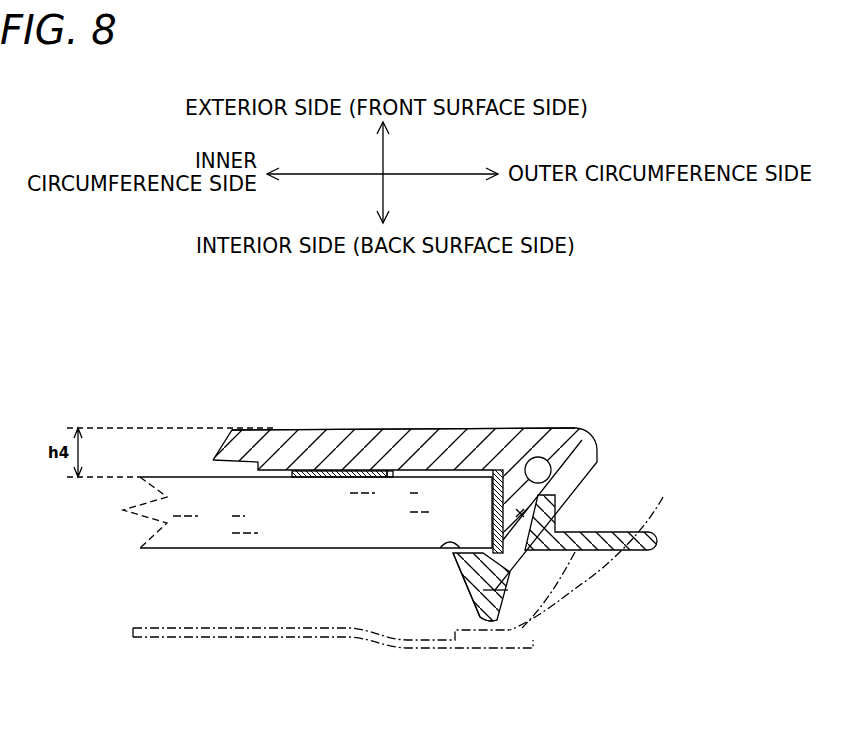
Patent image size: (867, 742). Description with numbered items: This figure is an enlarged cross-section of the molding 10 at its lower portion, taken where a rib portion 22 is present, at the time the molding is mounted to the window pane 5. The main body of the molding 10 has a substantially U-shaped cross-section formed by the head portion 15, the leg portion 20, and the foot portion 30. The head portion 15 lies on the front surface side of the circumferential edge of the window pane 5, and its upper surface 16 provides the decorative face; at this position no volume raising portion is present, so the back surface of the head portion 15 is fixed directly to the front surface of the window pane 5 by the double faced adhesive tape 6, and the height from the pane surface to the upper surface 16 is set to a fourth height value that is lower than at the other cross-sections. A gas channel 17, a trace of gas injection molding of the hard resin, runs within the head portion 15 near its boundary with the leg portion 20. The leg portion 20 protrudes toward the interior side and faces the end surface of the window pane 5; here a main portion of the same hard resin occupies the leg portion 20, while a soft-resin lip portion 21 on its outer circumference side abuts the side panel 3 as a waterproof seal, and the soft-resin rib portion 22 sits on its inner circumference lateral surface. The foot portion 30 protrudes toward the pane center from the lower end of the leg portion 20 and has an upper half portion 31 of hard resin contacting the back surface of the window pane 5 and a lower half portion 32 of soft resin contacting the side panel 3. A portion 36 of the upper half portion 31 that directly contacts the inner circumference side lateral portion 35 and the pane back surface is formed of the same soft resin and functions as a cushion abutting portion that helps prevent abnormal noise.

The side panel 3 is at (580, 557).
The window pane 5 is at (200, 533).
The double faced adhesive tape 6 is at (333, 477).
The molding 10 is at (272, 396).
The head portion 15 is at (393, 440).
The upper surface 16 is at (342, 428).
The gas channel 17 is at (538, 470).
The leg portion 20 is at (520, 513).
The lip portion 21 is at (578, 530).
The rib portion 22 is at (497, 502).
The foot portion 30 is at (503, 563).
The upper half portion 31 is at (470, 590).
The lower half portion 32 is at (483, 613).
The inner circumference side lateral portion 35 is at (463, 580).
The portion 36 is at (457, 542).